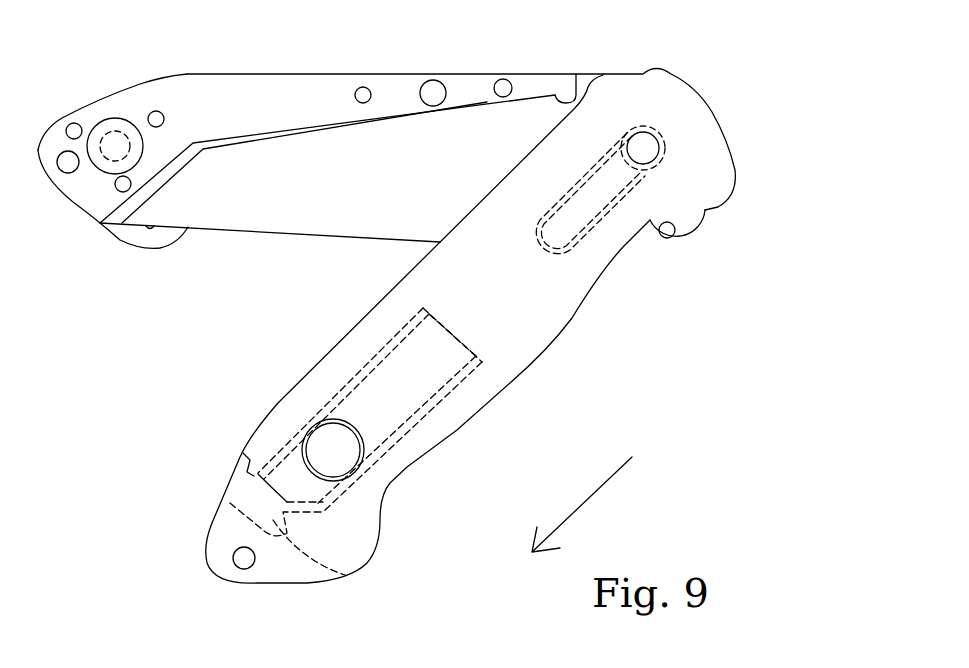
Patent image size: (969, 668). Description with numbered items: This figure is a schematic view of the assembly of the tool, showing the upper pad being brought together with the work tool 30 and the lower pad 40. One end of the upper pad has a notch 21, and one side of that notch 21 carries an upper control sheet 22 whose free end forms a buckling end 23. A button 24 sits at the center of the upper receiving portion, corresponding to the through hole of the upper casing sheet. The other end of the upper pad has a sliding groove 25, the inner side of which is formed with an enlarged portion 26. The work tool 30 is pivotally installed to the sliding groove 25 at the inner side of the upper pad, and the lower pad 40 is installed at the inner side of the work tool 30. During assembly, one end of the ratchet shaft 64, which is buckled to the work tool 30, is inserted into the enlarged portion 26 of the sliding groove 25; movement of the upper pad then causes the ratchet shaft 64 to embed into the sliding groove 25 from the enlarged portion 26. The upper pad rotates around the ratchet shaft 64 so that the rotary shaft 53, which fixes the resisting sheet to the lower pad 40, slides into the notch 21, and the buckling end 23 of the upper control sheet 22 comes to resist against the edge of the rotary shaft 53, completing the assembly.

The notch 21 is at (345, 575).
The upper control sheet 22 is at (427, 385).
The buckling end 23 is at (252, 484).
The button 24 is at (357, 473).
The sliding groove 25 is at (663, 223).
The enlarged portion 26 is at (567, 252).
The work tool 30 is at (394, 225).
The lower pad 40 is at (162, 250).
The rotary shaft 53 is at (116, 120).
The ratchet shaft 64 is at (660, 140).